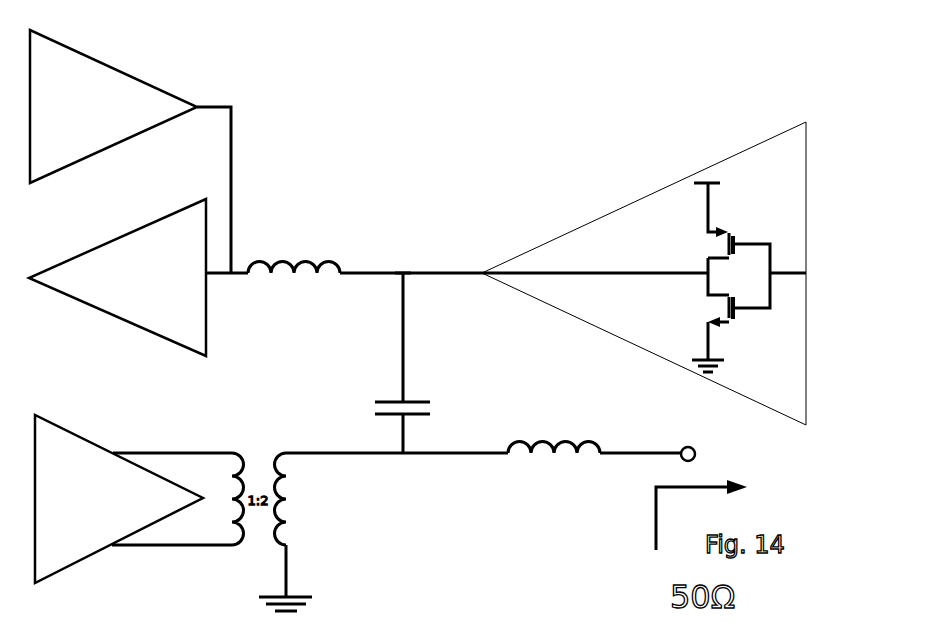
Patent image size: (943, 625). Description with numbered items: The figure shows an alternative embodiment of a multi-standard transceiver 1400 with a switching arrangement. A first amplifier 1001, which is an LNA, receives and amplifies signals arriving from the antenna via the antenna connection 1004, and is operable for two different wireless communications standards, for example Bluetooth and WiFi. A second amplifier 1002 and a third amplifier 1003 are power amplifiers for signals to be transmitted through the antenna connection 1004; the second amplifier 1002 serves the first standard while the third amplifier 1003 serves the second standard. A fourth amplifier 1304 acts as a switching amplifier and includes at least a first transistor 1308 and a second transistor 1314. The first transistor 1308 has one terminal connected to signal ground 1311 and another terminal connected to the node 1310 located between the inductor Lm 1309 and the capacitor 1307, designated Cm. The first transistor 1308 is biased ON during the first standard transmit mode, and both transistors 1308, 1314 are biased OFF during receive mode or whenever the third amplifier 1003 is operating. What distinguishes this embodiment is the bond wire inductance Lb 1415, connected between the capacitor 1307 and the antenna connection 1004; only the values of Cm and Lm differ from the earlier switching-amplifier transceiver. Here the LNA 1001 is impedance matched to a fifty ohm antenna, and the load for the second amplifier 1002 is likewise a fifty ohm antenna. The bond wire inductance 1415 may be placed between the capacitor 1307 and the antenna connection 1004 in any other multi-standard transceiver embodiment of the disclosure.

The first amplifier 1001 is at (134, 297).
The second amplifier 1002 is at (170, 98).
The third amplifier 1003 is at (85, 537).
The antenna connection 1004 is at (680, 447).
The fourth amplifier 1304 is at (620, 218).
The capacitor 1307 is at (432, 399).
The first transistor 1308 is at (706, 297).
The inductor Lm 1309 is at (313, 277).
The node 1310 is at (401, 263).
The signal ground 1311 is at (703, 363).
The second transistor 1314 is at (727, 230).
The circuit 1400 is at (340, 88).
The bond wire inductance Lb 1415 is at (560, 460).